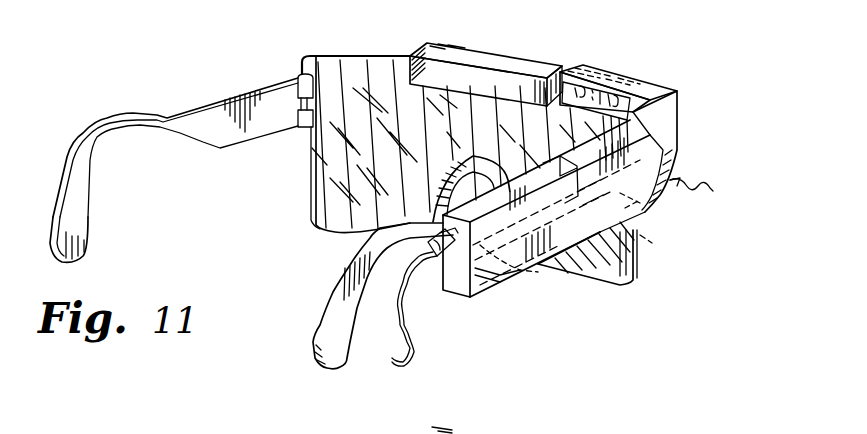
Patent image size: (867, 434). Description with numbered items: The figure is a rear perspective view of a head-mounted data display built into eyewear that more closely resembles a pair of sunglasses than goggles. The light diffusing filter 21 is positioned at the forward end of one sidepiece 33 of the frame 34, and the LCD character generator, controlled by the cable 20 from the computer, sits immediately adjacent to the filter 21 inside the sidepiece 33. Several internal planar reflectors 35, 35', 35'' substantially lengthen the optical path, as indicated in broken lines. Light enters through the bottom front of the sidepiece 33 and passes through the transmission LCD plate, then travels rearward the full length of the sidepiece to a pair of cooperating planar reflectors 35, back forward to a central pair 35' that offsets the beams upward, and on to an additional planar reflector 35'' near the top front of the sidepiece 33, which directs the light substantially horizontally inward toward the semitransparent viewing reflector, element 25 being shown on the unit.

The cable 20 is at (408, 343).
The light diffusing filter 21 is at (660, 190).
The display 25 is at (633, 82).
The sidepiece 33 is at (527, 187).
The frame 34 is at (544, 52).
The planar reflectors 35 is at (521, 246).
The central pair of planar reflectors 35' is at (682, 254).
The additional planar reflector 35'' is at (700, 153).